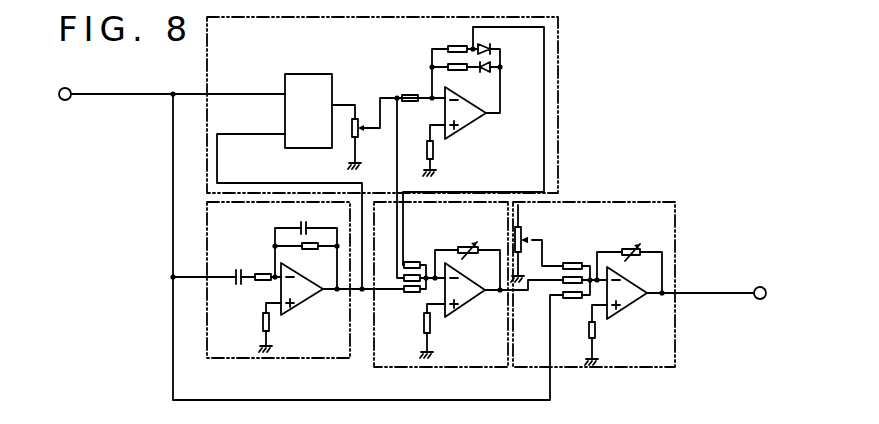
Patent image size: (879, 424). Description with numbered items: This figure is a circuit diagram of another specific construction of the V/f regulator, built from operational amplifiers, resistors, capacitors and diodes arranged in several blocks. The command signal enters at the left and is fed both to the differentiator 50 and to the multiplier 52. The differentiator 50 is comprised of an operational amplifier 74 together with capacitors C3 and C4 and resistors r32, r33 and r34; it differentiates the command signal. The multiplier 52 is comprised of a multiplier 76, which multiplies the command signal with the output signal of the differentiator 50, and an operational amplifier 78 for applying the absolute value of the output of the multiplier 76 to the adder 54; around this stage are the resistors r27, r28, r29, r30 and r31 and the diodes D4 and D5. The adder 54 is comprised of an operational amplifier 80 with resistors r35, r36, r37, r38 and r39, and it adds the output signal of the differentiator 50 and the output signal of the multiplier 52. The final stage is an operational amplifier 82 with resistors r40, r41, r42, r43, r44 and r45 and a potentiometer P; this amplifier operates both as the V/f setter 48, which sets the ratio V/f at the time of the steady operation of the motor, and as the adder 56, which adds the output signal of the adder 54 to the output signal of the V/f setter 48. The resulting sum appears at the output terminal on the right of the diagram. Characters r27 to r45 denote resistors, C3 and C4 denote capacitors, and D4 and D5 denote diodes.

The multiplier 52 is at (560, 80).
The multiplier 76 is at (290, 150).
The resistor r27 is at (364, 130).
The resistor r28 is at (408, 94).
The resistor r29 is at (463, 47).
The resistor r30 is at (464, 70).
The resistor r31 is at (436, 153).
The diode D4 is at (491, 47).
The diode D5 is at (501, 69).
The operational amplifier 78 is at (470, 125).
The differentiator 50 is at (265, 358).
The capacitor C3 is at (229, 263).
The capacitor C4 is at (301, 214).
The resistor r32 is at (264, 272).
The resistor r33 is at (310, 250).
The resistor r34 is at (266, 312).
The operational amplifier 74 is at (310, 298).
The adder 54 is at (413, 367).
The resistor r35 is at (430, 249).
The resistor r36 is at (409, 283).
The resistor r37 is at (416, 295).
The resistor r38 is at (466, 246).
The resistor r39 is at (429, 326).
The operational amplifier 80 is at (470, 302).
The potentiometer P is at (526, 226).
The resistor r40 is at (534, 238).
The resistor r41 is at (572, 265).
The resistor r42 is at (561, 283).
The resistor r43 is at (574, 299).
The resistor r44 is at (630, 250).
The resistor r45 is at (593, 327).
The operational amplifier 82 is at (591, 283).
The V/f setter 48 is at (645, 284).
The adder 56 is at (675, 348).